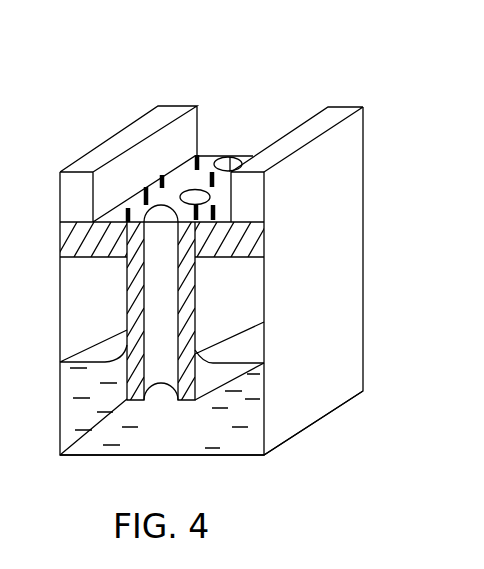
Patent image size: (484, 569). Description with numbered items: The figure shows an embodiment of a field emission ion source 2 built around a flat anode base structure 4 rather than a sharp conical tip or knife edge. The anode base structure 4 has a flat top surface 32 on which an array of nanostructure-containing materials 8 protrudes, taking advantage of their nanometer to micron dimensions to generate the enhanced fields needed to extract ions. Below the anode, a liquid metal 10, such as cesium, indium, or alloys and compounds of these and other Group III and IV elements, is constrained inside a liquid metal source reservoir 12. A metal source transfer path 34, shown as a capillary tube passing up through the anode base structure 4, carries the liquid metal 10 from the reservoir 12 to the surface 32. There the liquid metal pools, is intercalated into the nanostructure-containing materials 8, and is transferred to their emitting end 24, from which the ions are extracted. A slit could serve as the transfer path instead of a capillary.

The field emission ion source 2 is at (178, 70).
The emitting end 24 is at (127, 212).
The nanostructure-containing material 8 is at (123, 212).
The surface 32 is at (213, 152).
The anode base structure 4 is at (251, 226).
The metal source transfer path 34 is at (182, 327).
The liquid metal 10 is at (168, 440).
The liquid metal source reservoir 12 is at (255, 441).